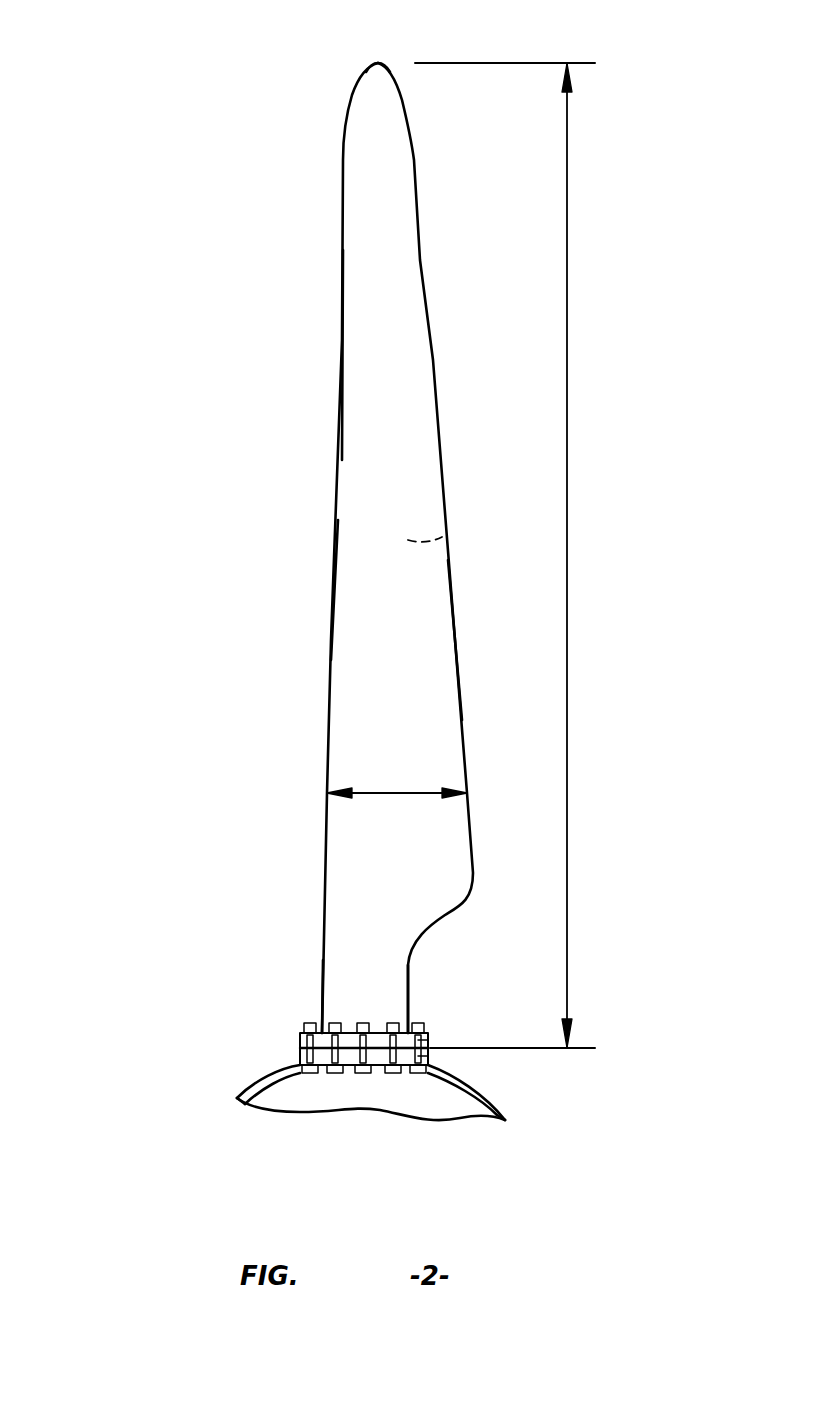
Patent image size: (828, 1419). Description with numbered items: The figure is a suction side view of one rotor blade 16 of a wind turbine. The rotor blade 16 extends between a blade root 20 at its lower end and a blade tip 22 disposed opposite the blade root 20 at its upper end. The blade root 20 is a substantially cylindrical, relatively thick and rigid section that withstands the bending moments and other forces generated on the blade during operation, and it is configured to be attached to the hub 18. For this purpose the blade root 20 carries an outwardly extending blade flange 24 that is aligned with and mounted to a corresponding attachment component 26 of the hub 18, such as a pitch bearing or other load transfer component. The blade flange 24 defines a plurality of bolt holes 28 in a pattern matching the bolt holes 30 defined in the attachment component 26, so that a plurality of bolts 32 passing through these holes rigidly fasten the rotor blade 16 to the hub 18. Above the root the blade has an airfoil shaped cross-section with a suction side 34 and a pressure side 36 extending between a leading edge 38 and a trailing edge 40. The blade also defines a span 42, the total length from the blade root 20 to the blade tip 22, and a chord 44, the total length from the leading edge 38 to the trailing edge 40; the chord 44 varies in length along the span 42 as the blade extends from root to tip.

The rotor blade 16 is at (205, 187).
The hub 18 is at (493, 1098).
The blade root 20 is at (368, 985).
The blade tip 22 is at (378, 62).
The blade flange 24 is at (298, 1042).
The attachment component 26 is at (298, 1060).
The bolt holes 28 is at (430, 1050).
The bolt holes 30 is at (445, 1048).
The bolts 32 is at (366, 1073).
The suction side 34 is at (377, 455).
The pressure side 36 is at (447, 533).
The leading edge 38 is at (331, 612).
The trailing edge 40 is at (458, 670).
The span 42 is at (567, 486).
The chord 44 is at (387, 793).